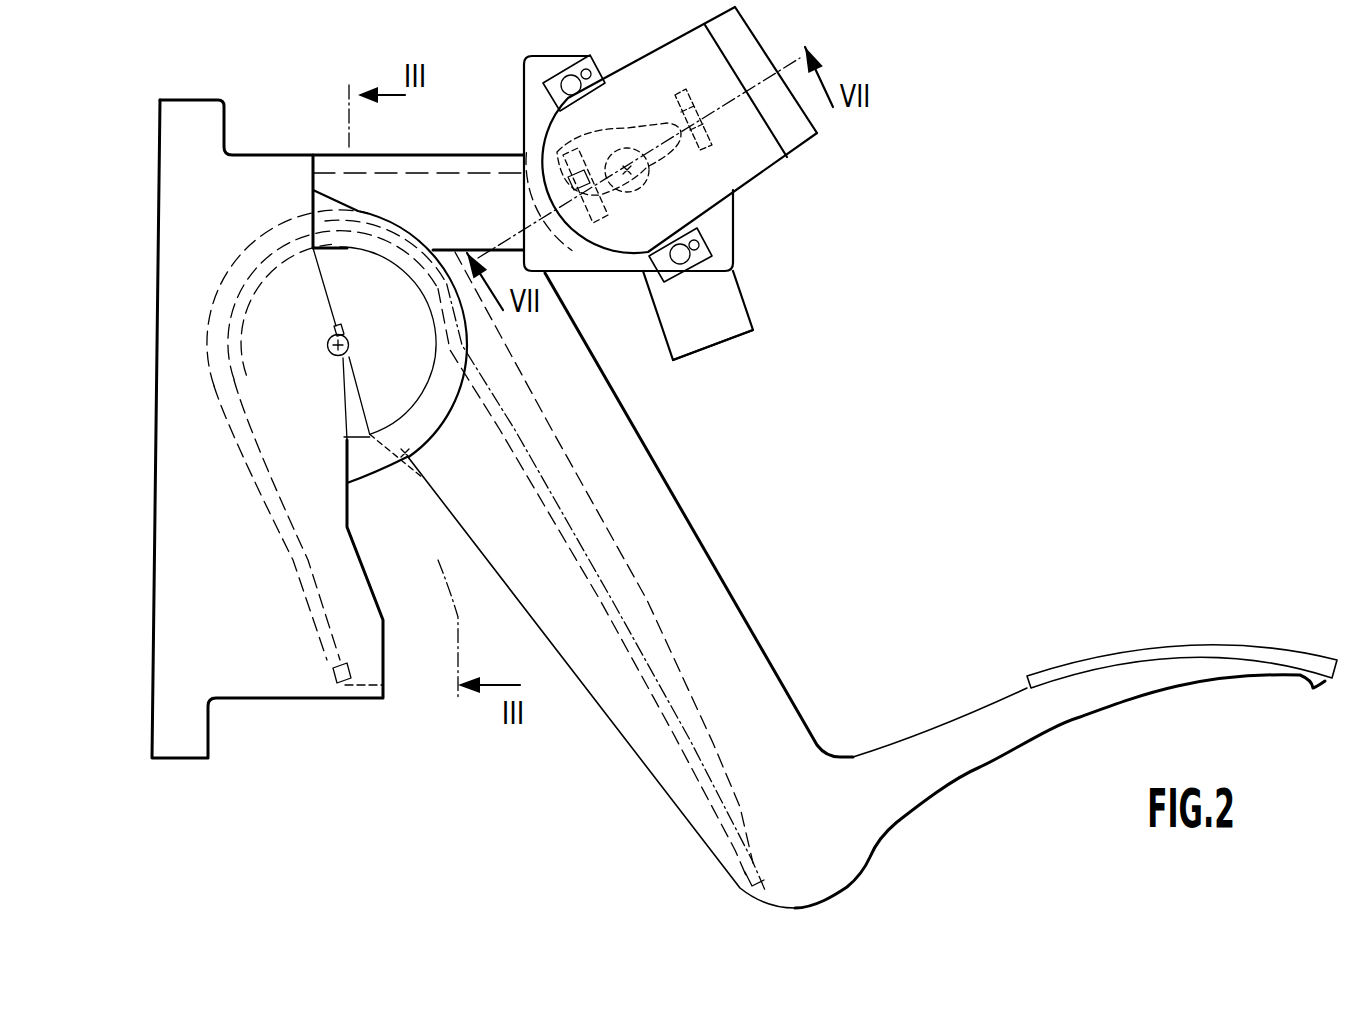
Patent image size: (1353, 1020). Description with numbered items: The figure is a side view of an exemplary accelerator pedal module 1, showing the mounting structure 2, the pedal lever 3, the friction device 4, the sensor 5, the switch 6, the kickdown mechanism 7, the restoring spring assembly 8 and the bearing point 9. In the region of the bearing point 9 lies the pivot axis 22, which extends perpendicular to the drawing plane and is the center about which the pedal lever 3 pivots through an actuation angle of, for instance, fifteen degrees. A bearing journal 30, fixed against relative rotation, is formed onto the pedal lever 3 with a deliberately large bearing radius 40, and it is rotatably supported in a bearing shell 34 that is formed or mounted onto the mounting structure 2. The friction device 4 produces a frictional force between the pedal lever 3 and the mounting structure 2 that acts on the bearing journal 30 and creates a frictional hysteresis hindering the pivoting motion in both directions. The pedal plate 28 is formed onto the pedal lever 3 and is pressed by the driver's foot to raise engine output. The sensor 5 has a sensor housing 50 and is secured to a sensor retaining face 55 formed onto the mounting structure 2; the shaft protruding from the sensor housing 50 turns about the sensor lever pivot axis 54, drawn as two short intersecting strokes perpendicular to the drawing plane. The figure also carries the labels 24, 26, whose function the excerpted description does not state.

The accelerator pedal module 1 is at (760, 410).
The mounting structure 2 is at (263, 683).
The pedal lever 3 is at (819, 549).
The friction device 4 is at (386, 482).
The sensor 5 is at (777, 170).
The switch 6 is at (733, 300).
The kickdown mechanism 7 is at (740, 328).
The restoring spring assembly 8 is at (535, 490).
The bearing point 9 is at (322, 365).
The pivot axis 22 is at (342, 343).
The rod 24 is at (582, 547).
The rod guide 26 is at (702, 500).
The pedal plate 28 is at (1122, 655).
The bearing journal 30 is at (343, 267).
The bearing shell 34 is at (420, 432).
The bearing radius 40 is at (425, 390).
The sensor housing 50 is at (742, 168).
The sensor lever pivot axis 54 is at (627, 170).
The sensor retaining face 55 is at (723, 238).